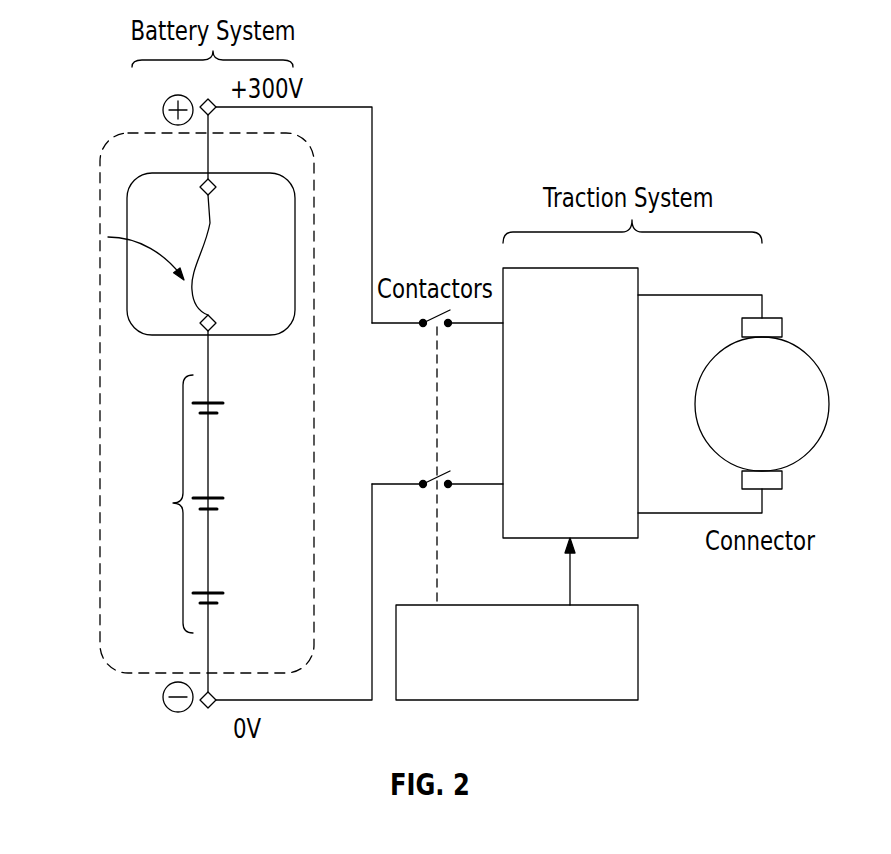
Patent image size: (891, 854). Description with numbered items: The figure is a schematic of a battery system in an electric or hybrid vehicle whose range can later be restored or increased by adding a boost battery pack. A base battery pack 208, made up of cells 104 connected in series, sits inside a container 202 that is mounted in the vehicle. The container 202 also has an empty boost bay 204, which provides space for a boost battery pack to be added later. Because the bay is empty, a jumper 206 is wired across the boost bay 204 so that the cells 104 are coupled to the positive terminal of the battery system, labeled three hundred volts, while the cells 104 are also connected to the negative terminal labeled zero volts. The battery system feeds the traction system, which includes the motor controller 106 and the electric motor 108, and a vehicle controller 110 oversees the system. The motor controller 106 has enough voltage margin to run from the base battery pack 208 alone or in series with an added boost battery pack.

The cells 104 is at (218, 401).
The motor controller 106 is at (517, 268).
The electric motor 108 is at (813, 362).
The vehicle controller 110 is at (638, 653).
The container 202 is at (100, 590).
The boost bay 204 is at (127, 303).
The jumper 206 is at (210, 224).
The base battery pack 208 is at (183, 440).